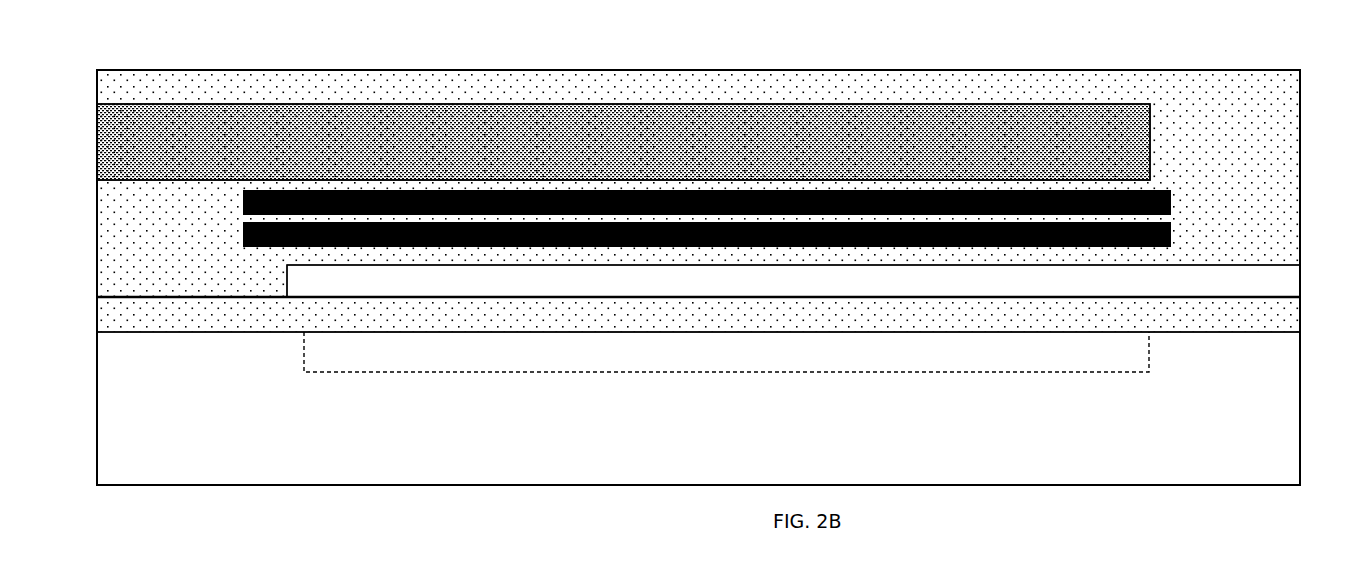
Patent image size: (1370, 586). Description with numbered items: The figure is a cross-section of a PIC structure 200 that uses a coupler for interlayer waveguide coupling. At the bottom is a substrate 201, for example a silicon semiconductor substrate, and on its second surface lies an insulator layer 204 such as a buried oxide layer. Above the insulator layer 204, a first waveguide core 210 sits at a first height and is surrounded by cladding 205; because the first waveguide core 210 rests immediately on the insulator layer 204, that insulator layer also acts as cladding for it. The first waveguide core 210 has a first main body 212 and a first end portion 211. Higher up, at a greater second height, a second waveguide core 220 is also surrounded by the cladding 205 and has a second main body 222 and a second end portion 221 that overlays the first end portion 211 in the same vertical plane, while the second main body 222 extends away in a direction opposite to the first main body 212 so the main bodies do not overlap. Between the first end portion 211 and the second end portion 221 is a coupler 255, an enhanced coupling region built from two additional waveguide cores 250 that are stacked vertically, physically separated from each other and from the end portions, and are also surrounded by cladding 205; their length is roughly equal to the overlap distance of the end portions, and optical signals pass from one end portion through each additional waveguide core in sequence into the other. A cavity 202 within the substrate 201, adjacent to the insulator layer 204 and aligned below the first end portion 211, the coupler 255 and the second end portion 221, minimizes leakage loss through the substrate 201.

The PIC structure 200 is at (883, 64).
The substrate 201 is at (698, 408).
The cavity 202 is at (834, 372).
The insulator layer 204 is at (1300, 314).
The cladding 205 is at (1300, 183).
The first waveguide core 210 is at (287, 280).
The first end portion 211 is at (698, 281).
The first main body 212 is at (1225, 281).
The second waveguide core 220 is at (1150, 142).
The second end portion 221 is at (623, 142).
The second main body 222 is at (623, 142).
The additional waveguide cores 250 is at (243, 203).
The coupler 255 is at (1185, 255).